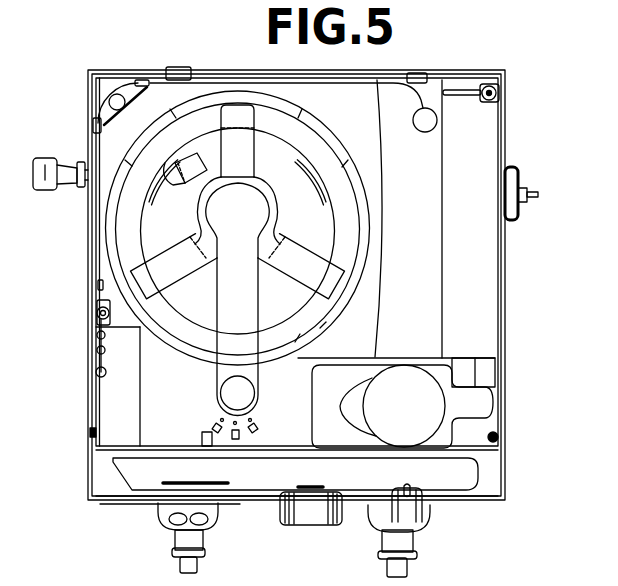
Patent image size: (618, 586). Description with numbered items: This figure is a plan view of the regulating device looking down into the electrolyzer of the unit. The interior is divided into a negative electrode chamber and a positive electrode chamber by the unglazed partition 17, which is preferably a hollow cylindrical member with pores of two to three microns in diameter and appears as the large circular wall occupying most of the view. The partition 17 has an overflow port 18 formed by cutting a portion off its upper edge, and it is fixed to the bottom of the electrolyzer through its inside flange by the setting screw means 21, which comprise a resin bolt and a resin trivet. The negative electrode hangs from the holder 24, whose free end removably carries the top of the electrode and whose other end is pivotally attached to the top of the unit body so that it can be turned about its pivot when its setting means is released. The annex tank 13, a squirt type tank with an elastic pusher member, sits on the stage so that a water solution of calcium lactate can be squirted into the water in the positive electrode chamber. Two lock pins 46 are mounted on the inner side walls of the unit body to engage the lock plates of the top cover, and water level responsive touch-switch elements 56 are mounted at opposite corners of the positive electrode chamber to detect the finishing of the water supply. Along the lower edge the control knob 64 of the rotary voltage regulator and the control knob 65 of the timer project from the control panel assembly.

The annex tank 13 is at (397, 372).
The unglazed partition 17 is at (322, 130).
The overflow port 18 is at (143, 132).
The setting screw means 21 is at (292, 250).
The holder 24 is at (228, 297).
The lock pins 46 is at (99, 426).
The water level responsive touch-switch elements 56 is at (487, 101).
The control knob 64 is at (431, 532).
The control knob 65 is at (308, 516).